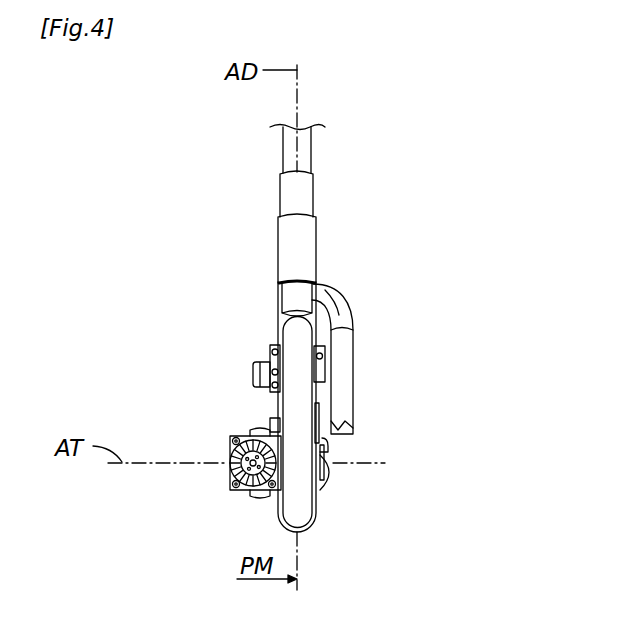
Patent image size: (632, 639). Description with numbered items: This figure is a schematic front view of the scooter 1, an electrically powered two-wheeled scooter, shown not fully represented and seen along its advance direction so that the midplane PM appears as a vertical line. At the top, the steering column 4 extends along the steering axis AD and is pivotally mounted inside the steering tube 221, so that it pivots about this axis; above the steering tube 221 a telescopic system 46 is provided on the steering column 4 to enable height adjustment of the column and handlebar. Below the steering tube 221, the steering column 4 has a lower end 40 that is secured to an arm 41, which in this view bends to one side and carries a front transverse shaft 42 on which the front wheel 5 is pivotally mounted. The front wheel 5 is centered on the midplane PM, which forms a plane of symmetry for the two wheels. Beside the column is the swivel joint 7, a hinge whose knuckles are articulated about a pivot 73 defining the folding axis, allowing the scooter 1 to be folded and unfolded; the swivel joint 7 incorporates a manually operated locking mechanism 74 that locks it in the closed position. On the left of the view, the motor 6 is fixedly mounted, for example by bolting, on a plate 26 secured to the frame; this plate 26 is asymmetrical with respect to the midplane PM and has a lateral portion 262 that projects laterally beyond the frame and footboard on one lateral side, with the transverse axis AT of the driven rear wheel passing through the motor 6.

The scooter 1 is at (452, 294).
The steering column 4 is at (320, 146).
The telescopic system 46 is at (301, 196).
The steering tube 221 is at (299, 250).
The lower end 40 is at (286, 297).
The arm 41 is at (339, 378).
The front transverse shaft 42 is at (346, 428).
The pivot 73 is at (321, 353).
The swivel joint 7 is at (256, 347).
The locking mechanism 74 is at (245, 376).
The front wheel 5 is at (324, 519).
The plate 26 is at (317, 490).
The lateral portion 262 is at (234, 445).
The motor 6 is at (234, 480).